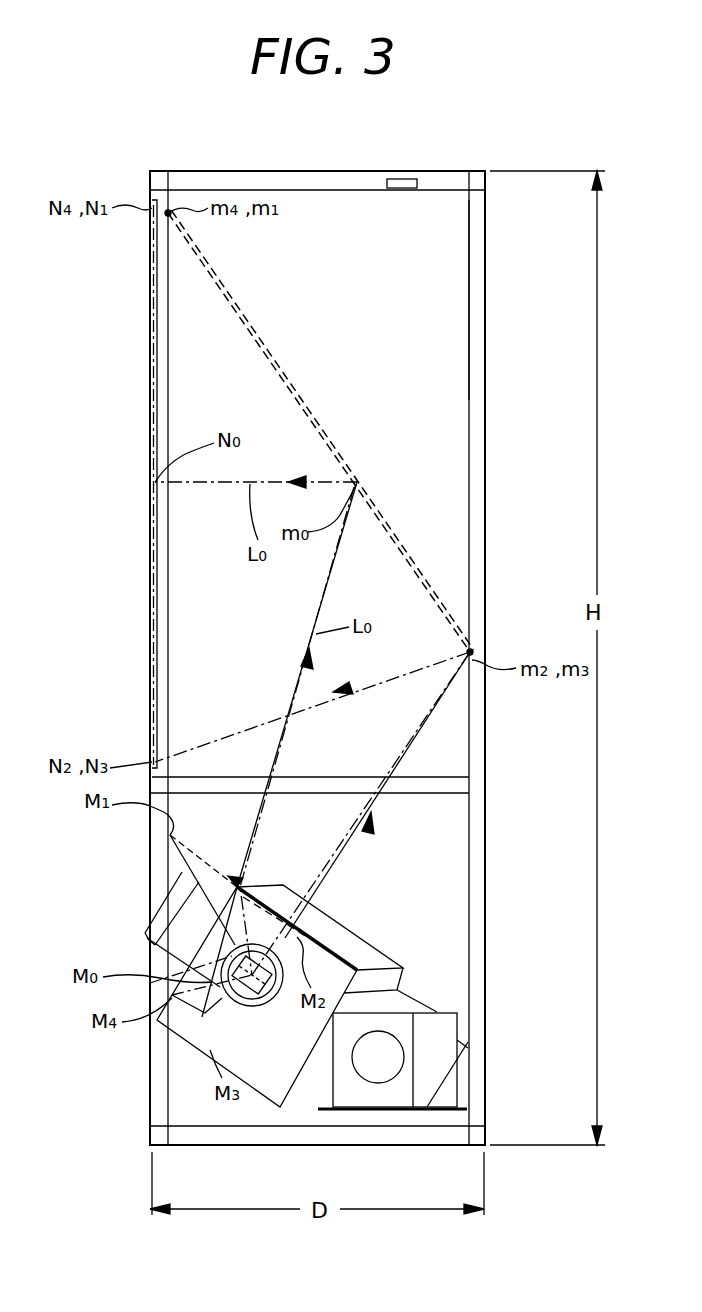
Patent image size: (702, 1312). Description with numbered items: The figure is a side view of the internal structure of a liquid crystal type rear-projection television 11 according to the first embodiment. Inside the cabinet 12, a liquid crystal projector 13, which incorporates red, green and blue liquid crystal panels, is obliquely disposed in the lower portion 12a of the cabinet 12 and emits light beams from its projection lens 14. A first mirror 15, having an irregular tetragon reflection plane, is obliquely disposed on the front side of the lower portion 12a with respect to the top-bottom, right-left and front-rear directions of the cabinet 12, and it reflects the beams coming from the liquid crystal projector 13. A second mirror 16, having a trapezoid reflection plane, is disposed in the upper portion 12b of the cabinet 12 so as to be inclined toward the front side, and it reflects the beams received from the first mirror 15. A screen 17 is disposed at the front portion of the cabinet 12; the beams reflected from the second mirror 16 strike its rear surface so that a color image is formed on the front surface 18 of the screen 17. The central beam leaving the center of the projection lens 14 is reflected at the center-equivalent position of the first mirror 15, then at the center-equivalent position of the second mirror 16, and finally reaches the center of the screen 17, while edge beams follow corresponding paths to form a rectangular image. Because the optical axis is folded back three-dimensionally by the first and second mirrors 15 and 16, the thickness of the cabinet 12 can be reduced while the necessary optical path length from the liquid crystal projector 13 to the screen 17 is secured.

The liquid crystal type rear-projection television 11 is at (452, 158).
The cabinet 12 is at (487, 410).
The lower portion of the cabinet 12a is at (432, 856).
The upper portion of the cabinet 12b is at (432, 308).
The liquid crystal projector 13 is at (378, 944).
The projection lens 14 is at (273, 998).
The first mirror 15 is at (208, 867).
The second mirror 16 is at (266, 345).
The screen 17 is at (157, 540).
The front surface of the screen 18 is at (150, 328).